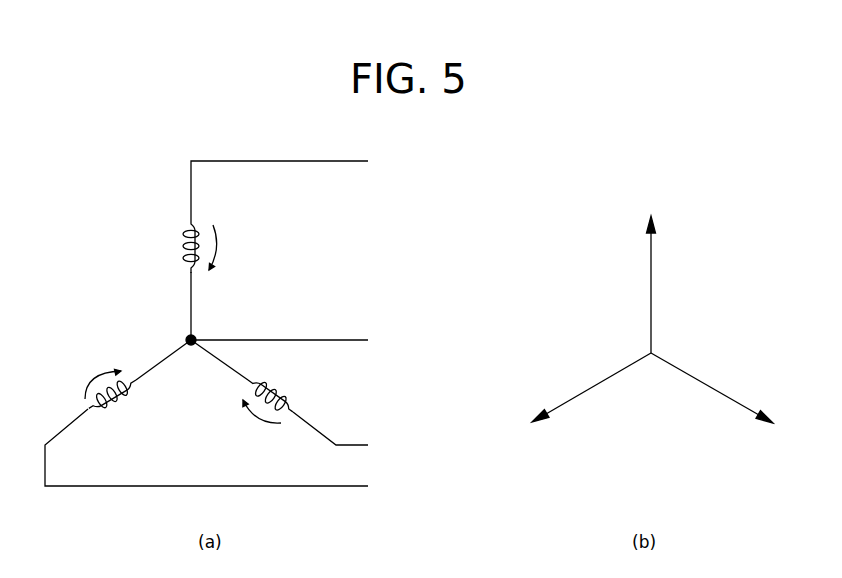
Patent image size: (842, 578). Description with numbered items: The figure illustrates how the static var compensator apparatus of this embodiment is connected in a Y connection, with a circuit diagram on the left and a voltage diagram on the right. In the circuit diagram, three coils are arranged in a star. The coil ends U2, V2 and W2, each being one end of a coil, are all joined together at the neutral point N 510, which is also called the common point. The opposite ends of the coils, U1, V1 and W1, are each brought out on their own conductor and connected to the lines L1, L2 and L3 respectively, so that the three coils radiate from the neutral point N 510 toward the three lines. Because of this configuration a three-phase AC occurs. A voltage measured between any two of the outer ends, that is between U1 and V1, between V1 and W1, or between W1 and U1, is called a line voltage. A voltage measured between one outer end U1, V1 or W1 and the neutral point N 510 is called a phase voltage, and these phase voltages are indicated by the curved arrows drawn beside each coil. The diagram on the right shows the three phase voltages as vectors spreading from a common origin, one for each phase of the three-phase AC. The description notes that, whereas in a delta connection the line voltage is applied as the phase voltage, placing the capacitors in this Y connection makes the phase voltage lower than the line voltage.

The neutral point 510 is at (186, 339).
The line L1 is at (294, 184).
The line L2 is at (345, 433).
The line L3 is at (221, 452).
The neutral point N is at (290, 339).
The coil end U1 is at (178, 240).
The coil end U2 is at (174, 302).
The coil end V1 is at (282, 395).
The coil end V2 is at (228, 360).
The coil end W1 is at (112, 405).
The coil end W2 is at (159, 360).